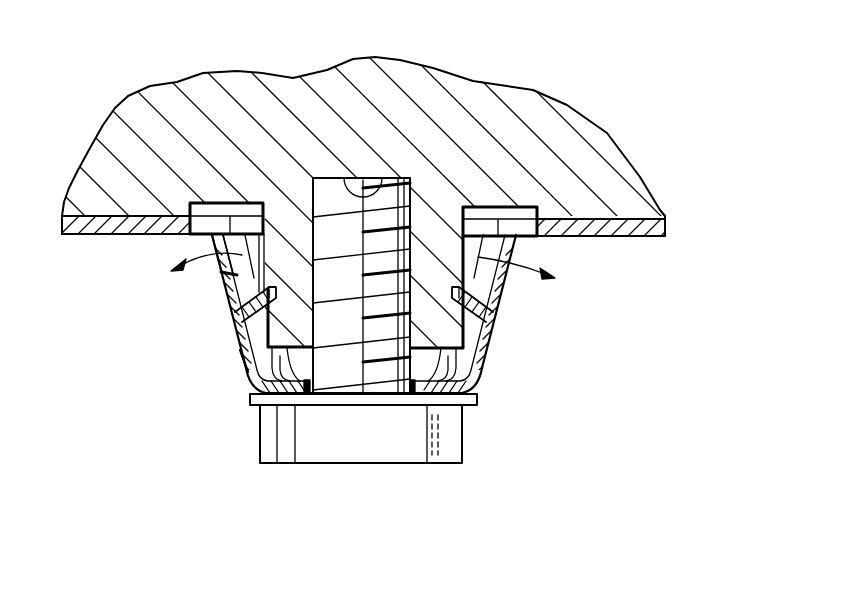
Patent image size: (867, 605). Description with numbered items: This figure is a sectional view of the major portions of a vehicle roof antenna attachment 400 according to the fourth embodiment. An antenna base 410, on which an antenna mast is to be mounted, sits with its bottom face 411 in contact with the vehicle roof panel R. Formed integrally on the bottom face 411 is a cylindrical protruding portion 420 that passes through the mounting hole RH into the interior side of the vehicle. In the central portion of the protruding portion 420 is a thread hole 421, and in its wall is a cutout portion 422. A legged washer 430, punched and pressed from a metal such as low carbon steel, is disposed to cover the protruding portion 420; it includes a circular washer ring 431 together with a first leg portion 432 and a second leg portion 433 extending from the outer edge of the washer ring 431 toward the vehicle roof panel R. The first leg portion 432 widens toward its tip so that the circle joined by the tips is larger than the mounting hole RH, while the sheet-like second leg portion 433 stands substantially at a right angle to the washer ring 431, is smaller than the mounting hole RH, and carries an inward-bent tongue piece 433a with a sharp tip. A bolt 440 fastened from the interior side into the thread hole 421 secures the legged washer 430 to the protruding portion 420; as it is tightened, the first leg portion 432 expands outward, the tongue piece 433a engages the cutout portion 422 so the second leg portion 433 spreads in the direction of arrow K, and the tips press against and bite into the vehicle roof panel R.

The vehicle roof antenna attachment 400 is at (613, 133).
The antenna base 410 is at (632, 192).
The bottom face 411 is at (125, 133).
The protruding portion 420 is at (276, 463).
The thread hole 421 is at (383, 186).
The cutout portion 422 is at (472, 326).
The legged washer 430 is at (488, 372).
The washer ring 431 is at (443, 400).
The first leg portion 432 is at (224, 278).
The second leg portion 433 is at (213, 244).
The tongue piece 433a is at (240, 353).
The bolt 440 is at (368, 447).
The mounting hole RH is at (248, 222).
The arrow direction K is at (359, 281).
The vehicle roof panel R is at (649, 238).